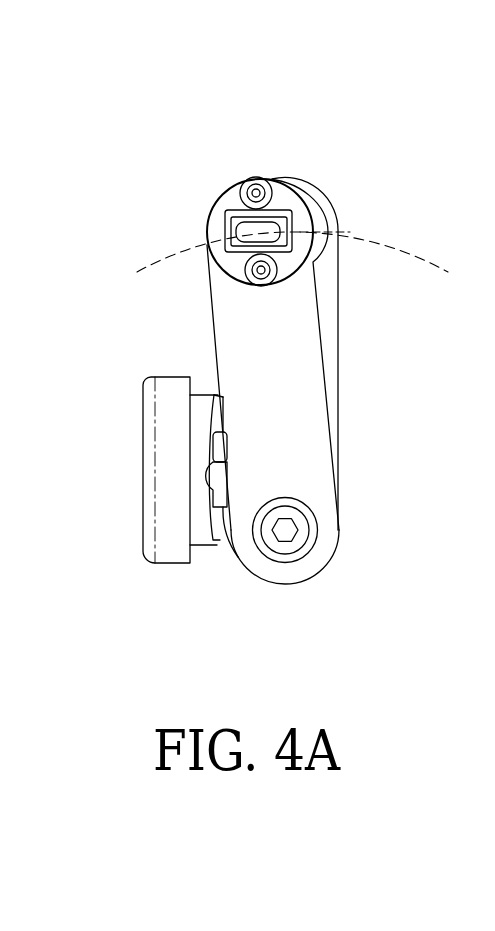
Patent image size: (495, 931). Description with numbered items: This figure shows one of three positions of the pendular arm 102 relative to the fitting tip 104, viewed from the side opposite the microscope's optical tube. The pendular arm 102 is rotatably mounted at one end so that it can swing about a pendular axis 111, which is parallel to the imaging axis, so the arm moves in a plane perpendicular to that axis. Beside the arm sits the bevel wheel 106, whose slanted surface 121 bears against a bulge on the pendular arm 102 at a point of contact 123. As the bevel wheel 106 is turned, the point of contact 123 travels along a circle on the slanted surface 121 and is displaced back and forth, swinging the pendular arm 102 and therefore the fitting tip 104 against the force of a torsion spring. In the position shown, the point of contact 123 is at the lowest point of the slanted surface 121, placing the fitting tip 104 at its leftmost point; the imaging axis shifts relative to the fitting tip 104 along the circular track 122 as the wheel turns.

The pendular arm 102 is at (290, 403).
The fitting tip 104 is at (220, 213).
The bevel wheel 106 is at (163, 510).
The pendular axis 111 is at (288, 529).
The slanted surface 121 is at (226, 527).
The circular track 122 is at (160, 252).
The point of contact 123 is at (209, 490).